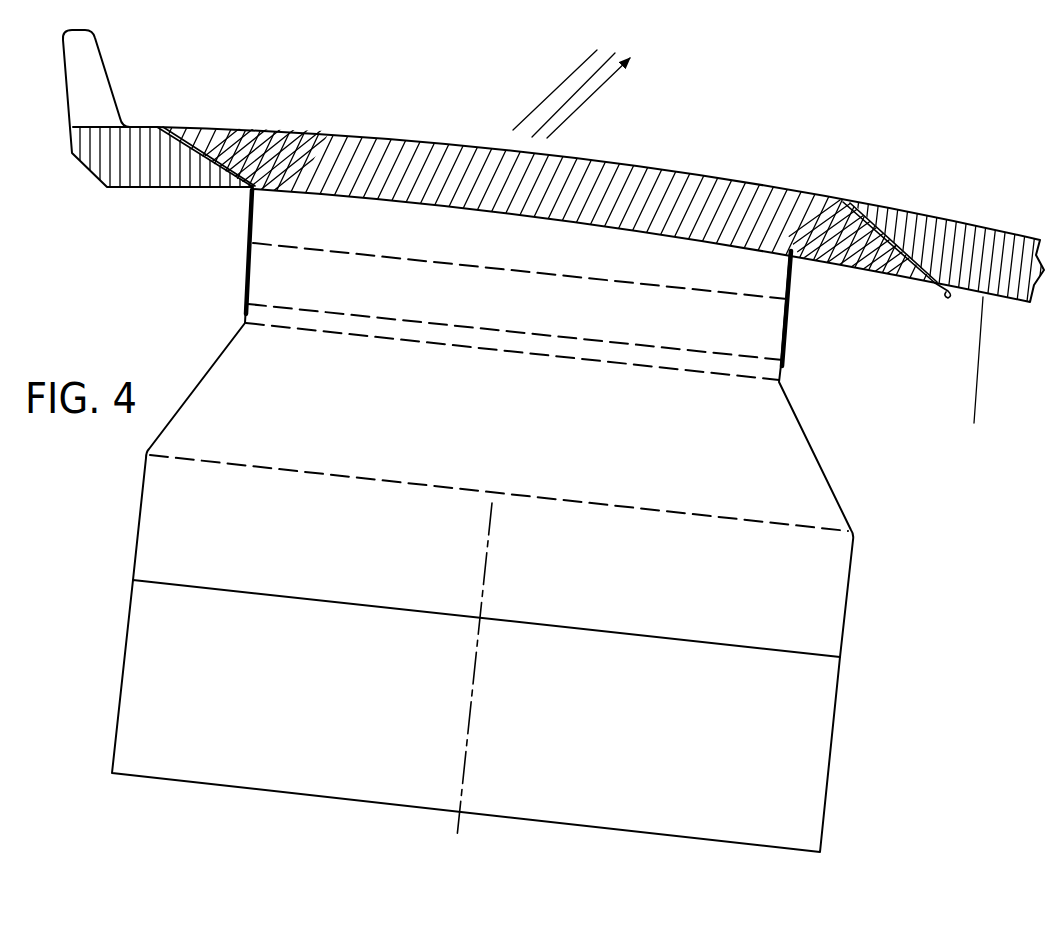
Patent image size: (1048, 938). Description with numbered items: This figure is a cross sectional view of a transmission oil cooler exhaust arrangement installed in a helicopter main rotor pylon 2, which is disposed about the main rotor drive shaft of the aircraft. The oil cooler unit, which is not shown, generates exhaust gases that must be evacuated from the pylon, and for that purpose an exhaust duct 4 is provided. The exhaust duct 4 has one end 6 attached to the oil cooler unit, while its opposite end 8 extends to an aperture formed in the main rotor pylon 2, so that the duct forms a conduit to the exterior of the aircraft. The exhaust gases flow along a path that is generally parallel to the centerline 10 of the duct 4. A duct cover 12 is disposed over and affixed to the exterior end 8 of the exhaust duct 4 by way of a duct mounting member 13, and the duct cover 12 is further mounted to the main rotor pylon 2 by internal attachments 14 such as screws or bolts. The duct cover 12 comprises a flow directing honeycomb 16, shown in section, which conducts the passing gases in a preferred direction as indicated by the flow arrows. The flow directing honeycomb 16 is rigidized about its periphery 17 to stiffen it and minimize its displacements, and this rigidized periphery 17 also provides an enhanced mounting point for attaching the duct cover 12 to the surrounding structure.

The main rotor pylon 2 is at (980, 222).
The exhaust duct 4 is at (838, 703).
The end of exhaust duct 6 is at (107, 760).
The opposite end of exhaust duct 8 is at (240, 315).
The centerline of the duct 10 is at (478, 672).
The duct cover 12 is at (717, 152).
The duct mounting member 13 is at (243, 222).
The internal attachments 14 is at (950, 300).
The flow directing honeycomb 16 is at (413, 145).
The periphery of the flow directing honeycomb 17 is at (272, 117).